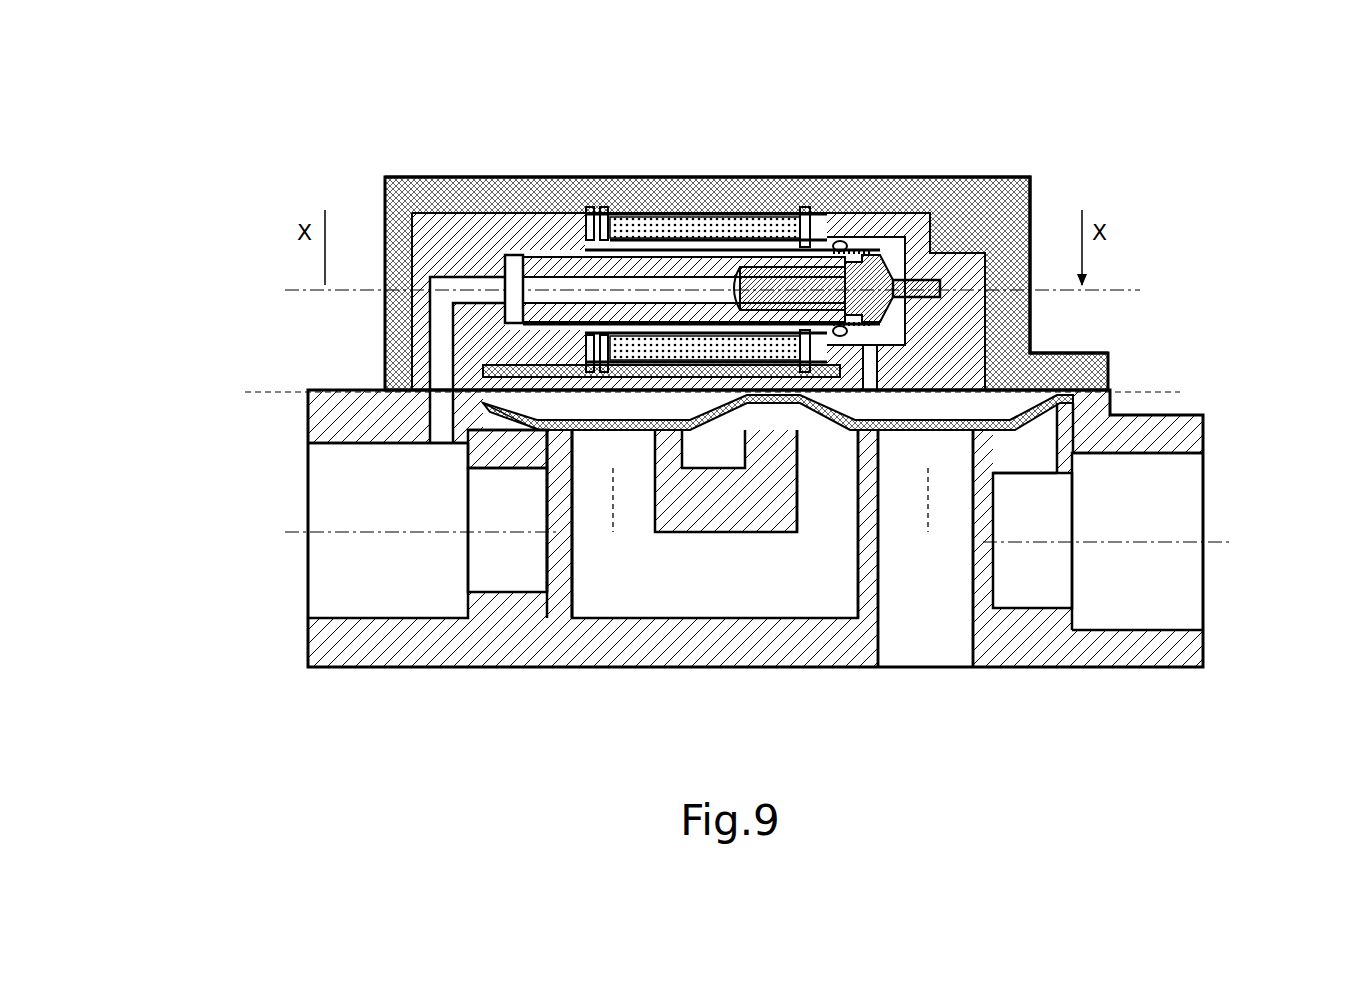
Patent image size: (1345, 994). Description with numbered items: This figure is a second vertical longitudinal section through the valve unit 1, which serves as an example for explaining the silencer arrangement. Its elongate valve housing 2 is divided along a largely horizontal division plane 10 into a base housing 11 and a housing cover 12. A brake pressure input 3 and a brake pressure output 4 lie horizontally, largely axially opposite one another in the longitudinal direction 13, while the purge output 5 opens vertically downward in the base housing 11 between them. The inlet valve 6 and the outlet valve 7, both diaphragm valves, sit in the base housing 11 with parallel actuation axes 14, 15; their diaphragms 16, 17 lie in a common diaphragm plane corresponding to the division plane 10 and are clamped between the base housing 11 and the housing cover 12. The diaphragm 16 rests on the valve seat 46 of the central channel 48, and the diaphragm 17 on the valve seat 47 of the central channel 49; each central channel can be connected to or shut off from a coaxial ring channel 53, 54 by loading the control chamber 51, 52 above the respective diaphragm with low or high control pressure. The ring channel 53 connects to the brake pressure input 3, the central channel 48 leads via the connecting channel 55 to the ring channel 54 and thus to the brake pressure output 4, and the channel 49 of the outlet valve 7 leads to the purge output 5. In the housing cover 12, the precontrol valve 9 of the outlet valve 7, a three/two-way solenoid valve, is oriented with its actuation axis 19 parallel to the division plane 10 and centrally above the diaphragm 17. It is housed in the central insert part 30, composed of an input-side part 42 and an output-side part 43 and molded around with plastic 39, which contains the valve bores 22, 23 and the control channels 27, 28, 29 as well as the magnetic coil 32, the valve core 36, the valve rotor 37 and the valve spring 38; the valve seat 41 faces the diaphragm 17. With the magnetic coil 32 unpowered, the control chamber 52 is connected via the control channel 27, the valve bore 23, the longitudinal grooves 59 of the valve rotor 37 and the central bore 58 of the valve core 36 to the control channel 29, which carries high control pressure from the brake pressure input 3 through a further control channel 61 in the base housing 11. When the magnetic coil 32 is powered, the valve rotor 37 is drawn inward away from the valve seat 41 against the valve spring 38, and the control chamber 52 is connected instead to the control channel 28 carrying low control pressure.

The valve unit 1 is at (232, 132).
The valve housing 2 is at (755, 420).
The brake pressure input 3 is at (353, 600).
The brake pressure output 4 is at (1140, 597).
The purge output 5 is at (950, 600).
The inlet valve 6 is at (615, 552).
The outlet valve 7 is at (920, 552).
The precontrol valve 9 is at (703, 163).
The division plane 10 is at (240, 389).
The base housing 11 is at (533, 640).
The housing cover 12 is at (990, 205).
The longitudinal direction 13 is at (775, 712).
The actuation axis 14 is at (615, 527).
The actuation axis 15 is at (920, 520).
The diaphragm 16 is at (513, 455).
The diaphragm 17 is at (1028, 422).
The actuation axis 19 is at (637, 213).
The valve bore 22 is at (516, 253).
The valve bore 23 is at (852, 262).
The control channel 27 is at (888, 360).
The control channel 28 is at (918, 283).
The control channel 29 is at (440, 322).
The insert part 30 is at (863, 214).
The magnetic coil 32 is at (745, 215).
The valve core 36 is at (562, 253).
The valve rotor 37 is at (810, 237).
The valve spring 38 is at (848, 243).
The plastic 39 is at (1005, 215).
The valve seat 41 is at (900, 245).
The input-side part 42 is at (462, 212).
The output-side part 43 is at (935, 327).
The valve seat 46 is at (540, 475).
The valve seat 47 is at (1023, 473).
The central channel 48 is at (599, 469).
The central channel 49 is at (914, 469).
The control chamber 51 is at (515, 420).
The control chamber 52 is at (1105, 377).
The ring channel 53 is at (557, 445).
The ring channel 54 is at (1025, 447).
The connecting channel 55 is at (731, 595).
The central bore 58 is at (590, 208).
The longitudinal grooves 59 is at (788, 213).
The further control channel 61 is at (438, 410).